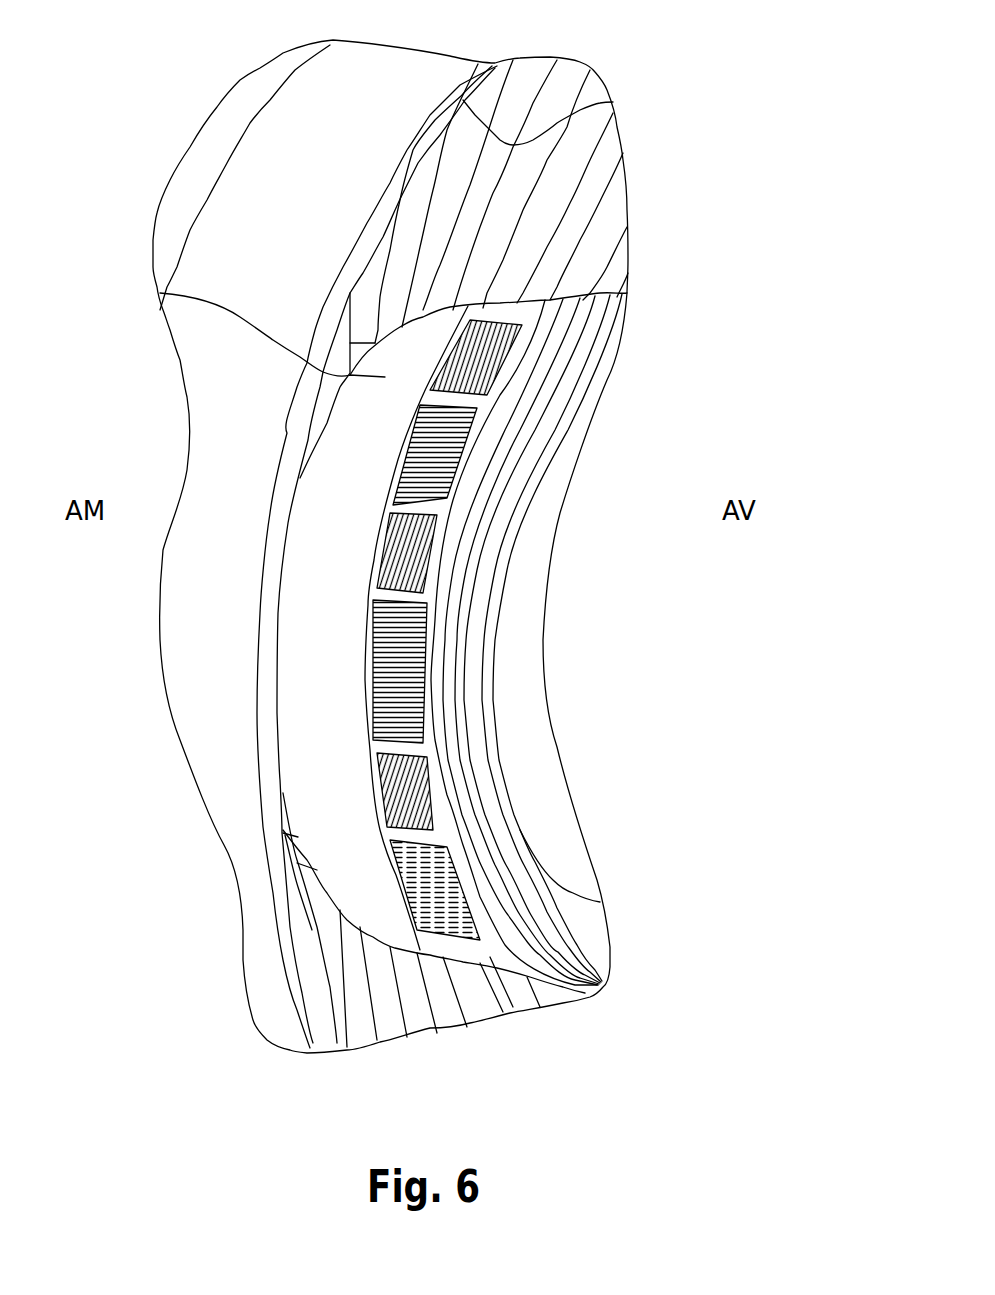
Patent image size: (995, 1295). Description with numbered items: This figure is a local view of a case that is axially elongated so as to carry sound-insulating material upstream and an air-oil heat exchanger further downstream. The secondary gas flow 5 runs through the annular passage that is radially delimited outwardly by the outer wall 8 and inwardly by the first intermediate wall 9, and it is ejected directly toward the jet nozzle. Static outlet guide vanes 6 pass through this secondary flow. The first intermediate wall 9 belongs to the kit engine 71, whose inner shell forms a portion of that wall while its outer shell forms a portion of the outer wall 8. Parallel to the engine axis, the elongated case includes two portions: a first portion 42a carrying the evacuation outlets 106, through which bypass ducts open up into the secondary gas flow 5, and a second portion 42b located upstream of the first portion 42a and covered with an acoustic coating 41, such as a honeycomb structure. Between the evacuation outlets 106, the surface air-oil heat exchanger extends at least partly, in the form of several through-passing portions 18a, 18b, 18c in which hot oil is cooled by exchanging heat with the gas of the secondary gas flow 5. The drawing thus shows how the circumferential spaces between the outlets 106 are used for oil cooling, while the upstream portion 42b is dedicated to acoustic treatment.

The secondary gas flow 5 is at (390, 546).
The static outlet guide vanes 6 is at (523, 177).
The outer wall 8 is at (613, 102).
The acoustic coating 41 is at (160, 293).
The kit engine 71 is at (262, 704).
The first intermediate wall 9 is at (325, 804).
The first evacuation outlets 106 is at (470, 358).
The portion of surface air-oil heat exchanger 18a is at (403, 455).
The portion of surface air-oil heat exchanger 18b is at (367, 680).
The portion of surface air-oil heat exchanger 18c is at (407, 872).
The second portion 42b is at (378, 910).
The first portion 42a is at (515, 1010).